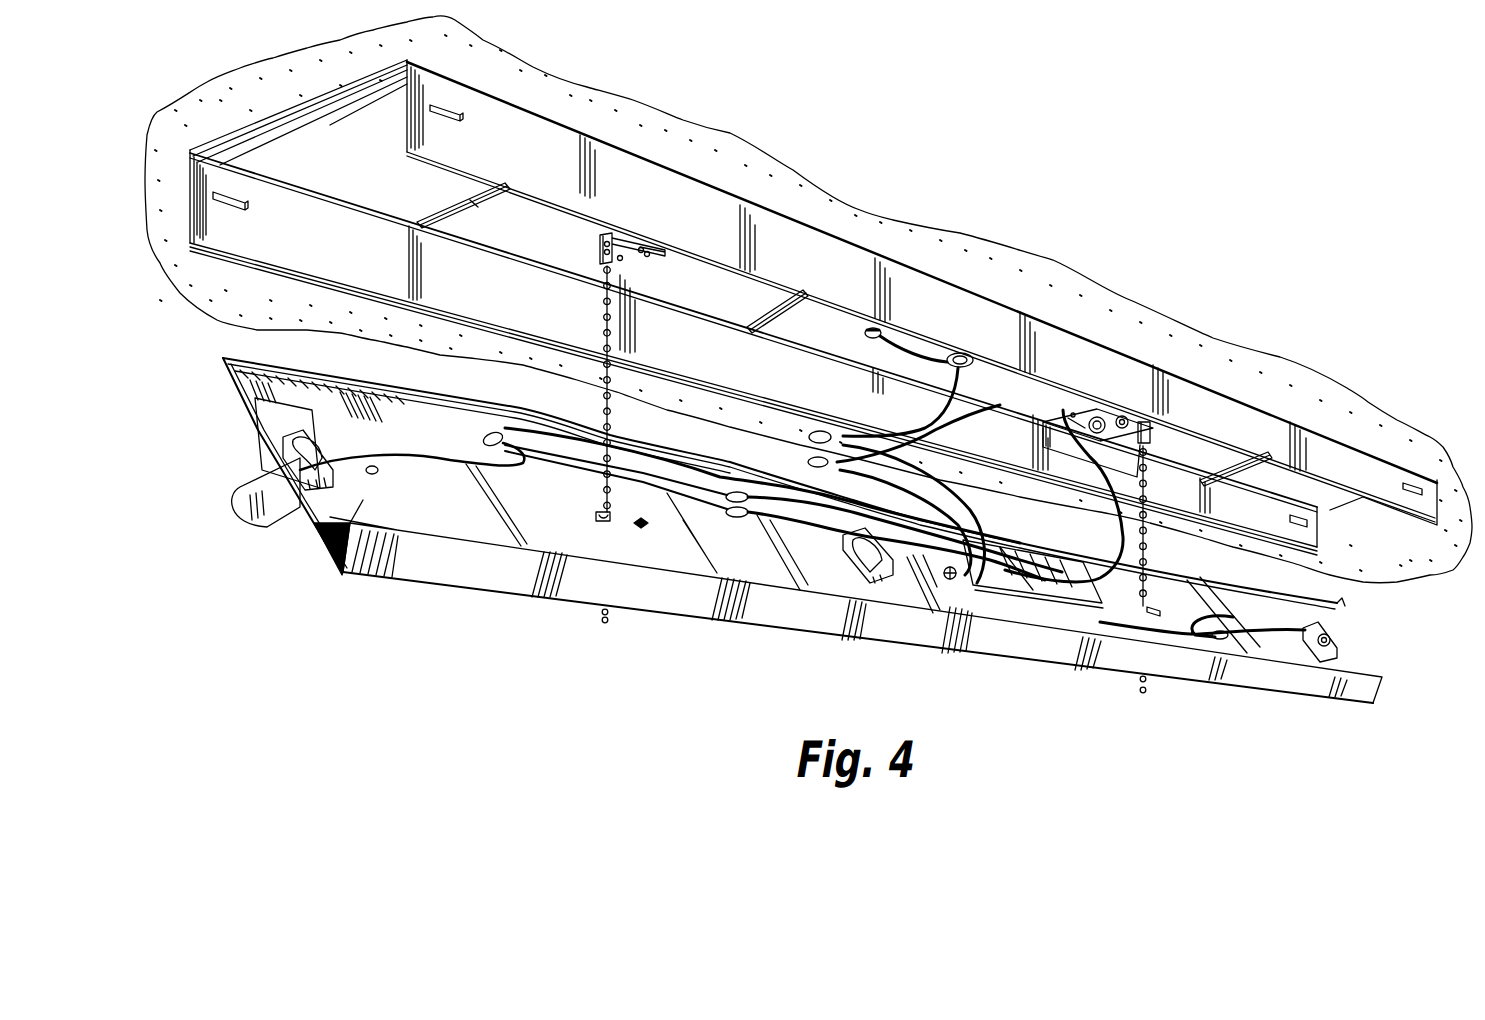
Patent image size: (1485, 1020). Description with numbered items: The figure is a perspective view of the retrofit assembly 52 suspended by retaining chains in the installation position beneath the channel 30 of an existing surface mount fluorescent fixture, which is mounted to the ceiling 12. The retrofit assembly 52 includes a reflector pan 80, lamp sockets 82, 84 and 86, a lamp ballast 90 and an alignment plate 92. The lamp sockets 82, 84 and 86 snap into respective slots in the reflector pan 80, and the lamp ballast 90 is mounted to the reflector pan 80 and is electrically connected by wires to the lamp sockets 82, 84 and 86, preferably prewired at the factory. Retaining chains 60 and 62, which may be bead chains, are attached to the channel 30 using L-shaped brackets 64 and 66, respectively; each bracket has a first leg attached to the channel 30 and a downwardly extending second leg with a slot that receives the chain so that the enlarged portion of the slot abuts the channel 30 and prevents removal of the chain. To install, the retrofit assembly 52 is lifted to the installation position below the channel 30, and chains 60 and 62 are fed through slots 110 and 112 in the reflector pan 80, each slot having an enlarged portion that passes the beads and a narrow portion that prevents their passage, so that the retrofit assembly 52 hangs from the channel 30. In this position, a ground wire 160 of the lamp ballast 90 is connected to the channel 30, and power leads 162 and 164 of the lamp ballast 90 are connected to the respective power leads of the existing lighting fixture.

The ceiling 12 is at (805, 192).
The channel 30 is at (685, 187).
The retrofit assembly 52 is at (845, 643).
The retaining chain 60 is at (605, 340).
The retaining chain 62 is at (1148, 430).
The L-shaped bracket 64 is at (627, 240).
The L-shaped bracket 66 is at (1137, 441).
The reflector pan 80 is at (648, 612).
The lamp socket 82 is at (243, 515).
The lamp socket 84 is at (853, 567).
The lamp socket 86 is at (1340, 656).
The lamp ballast 90 is at (1018, 607).
The alignment plate 92 is at (398, 532).
The slot 110 is at (593, 518).
The slot 112 is at (1162, 612).
The ground wire 160 is at (1063, 410).
The power lead 162 is at (985, 400).
The power lead 164 is at (1003, 405).